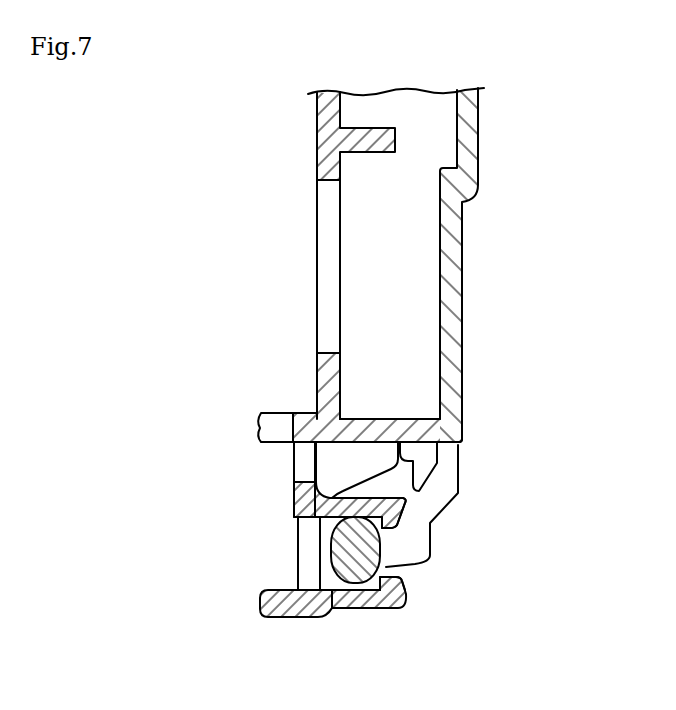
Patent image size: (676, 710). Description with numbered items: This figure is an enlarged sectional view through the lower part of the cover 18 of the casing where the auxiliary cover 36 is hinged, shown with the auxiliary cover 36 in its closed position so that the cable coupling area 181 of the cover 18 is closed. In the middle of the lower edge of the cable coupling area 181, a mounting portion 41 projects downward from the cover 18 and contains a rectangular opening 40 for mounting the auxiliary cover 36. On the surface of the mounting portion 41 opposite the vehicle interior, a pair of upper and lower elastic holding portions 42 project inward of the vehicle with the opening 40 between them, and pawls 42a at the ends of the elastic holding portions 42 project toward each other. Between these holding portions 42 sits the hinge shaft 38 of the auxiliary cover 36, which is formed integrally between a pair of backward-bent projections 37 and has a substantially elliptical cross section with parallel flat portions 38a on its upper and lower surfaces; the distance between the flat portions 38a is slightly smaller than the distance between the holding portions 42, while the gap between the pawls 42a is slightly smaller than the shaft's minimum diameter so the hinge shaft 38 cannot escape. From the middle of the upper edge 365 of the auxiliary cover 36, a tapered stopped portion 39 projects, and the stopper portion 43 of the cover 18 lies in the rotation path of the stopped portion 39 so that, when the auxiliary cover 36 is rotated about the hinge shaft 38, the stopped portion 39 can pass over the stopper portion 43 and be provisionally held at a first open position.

The cover 18 is at (316, 140).
The cable coupling area 181 is at (343, 380).
The auxiliary cover 36 is at (464, 250).
The upper edge 365 is at (461, 445).
The projection 37 is at (447, 510).
The hinge shaft 38 is at (330, 558).
The flat portion 38a is at (392, 510).
The stopped portion 39 is at (430, 471).
The opening 40 is at (312, 519).
The mounting portion 41 is at (300, 506).
The elastic holding portion 42 is at (378, 502).
The pawl 42a is at (397, 580).
The stopper portion 43 is at (275, 612).